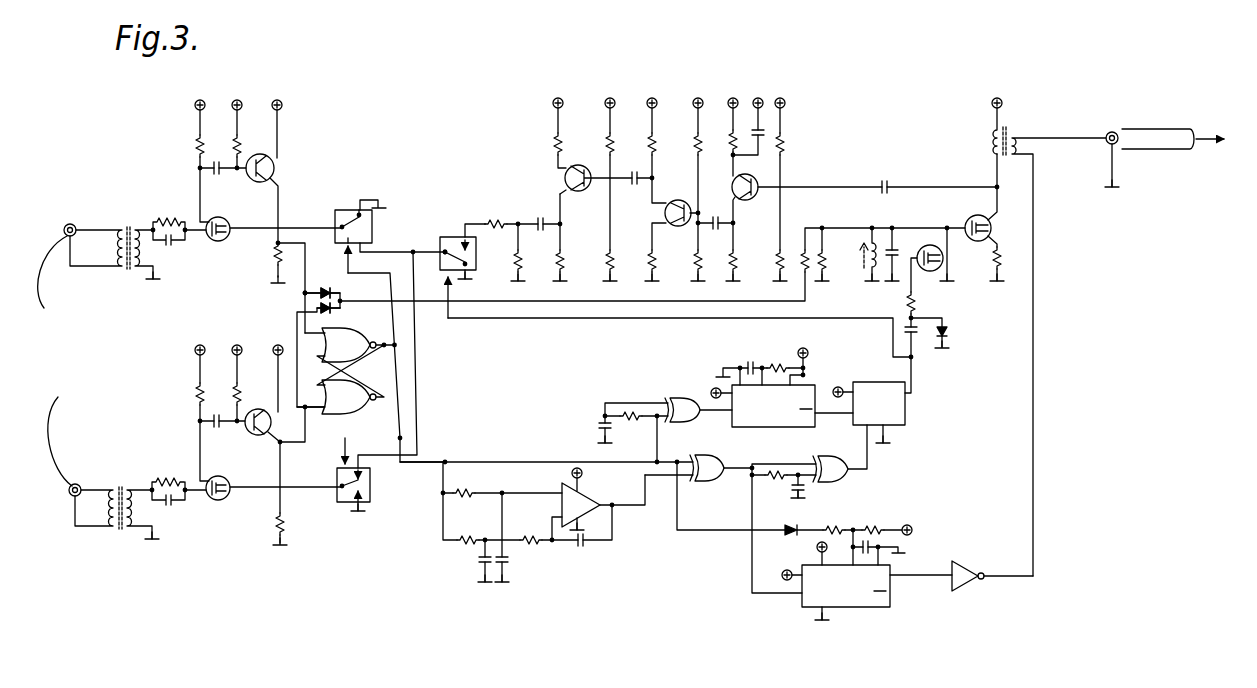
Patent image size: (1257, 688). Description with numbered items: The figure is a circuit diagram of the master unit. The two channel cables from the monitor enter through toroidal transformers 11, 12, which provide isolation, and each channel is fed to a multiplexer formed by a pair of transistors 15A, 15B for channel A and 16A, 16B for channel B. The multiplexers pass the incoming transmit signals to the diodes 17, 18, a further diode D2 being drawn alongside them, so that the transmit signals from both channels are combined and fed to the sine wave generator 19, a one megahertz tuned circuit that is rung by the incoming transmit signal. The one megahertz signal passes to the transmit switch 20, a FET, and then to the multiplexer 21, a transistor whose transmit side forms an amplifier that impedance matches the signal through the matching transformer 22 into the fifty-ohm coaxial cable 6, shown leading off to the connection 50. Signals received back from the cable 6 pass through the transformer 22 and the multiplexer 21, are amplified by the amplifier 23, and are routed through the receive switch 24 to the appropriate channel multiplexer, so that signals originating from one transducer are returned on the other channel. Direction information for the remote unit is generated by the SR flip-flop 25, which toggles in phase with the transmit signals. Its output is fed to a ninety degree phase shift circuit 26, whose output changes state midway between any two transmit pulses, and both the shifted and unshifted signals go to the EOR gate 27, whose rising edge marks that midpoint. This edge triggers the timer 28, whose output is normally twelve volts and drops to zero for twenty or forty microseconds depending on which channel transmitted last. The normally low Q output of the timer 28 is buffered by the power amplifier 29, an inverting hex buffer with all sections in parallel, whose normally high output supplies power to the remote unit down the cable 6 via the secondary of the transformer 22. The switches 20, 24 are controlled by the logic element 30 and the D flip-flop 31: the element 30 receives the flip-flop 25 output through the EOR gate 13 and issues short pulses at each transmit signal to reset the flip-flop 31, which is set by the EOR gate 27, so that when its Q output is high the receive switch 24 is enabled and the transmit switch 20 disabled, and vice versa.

The coaxial cable 6 is at (1067, 138).
The toroidal transformer 11 is at (114, 194).
The toroidal transformer 12 is at (112, 480).
The EOR gate 13 is at (668, 404).
The transistor 15A is at (215, 241).
The transistor 15B is at (273, 160).
The transistor 16A is at (225, 500).
The transistor 16B is at (264, 436).
The diode 17 is at (329, 288).
The diode 18 is at (341, 311).
The diode D2 is at (320, 311).
The sine wave generator 19 is at (872, 225).
The transmit switch 20 is at (956, 294).
The multiplexer 21 is at (1012, 231).
The matching transformer 22 is at (1011, 103).
The amplifier 23 is at (646, 60).
The receive switch 24 is at (446, 234).
The SR flip-flop 25 is at (379, 370).
The phase shift circuit 26 is at (596, 573).
The EOR gate 27 is at (724, 486).
The timer 28 is at (840, 613).
The power amplifier 29 is at (968, 566).
The logic element 30 is at (810, 384).
The D flip-flop 31 is at (907, 418).
The cable output 50 is at (1226, 140).